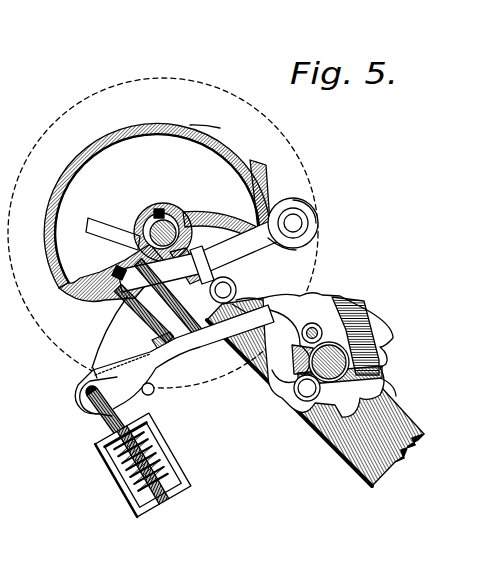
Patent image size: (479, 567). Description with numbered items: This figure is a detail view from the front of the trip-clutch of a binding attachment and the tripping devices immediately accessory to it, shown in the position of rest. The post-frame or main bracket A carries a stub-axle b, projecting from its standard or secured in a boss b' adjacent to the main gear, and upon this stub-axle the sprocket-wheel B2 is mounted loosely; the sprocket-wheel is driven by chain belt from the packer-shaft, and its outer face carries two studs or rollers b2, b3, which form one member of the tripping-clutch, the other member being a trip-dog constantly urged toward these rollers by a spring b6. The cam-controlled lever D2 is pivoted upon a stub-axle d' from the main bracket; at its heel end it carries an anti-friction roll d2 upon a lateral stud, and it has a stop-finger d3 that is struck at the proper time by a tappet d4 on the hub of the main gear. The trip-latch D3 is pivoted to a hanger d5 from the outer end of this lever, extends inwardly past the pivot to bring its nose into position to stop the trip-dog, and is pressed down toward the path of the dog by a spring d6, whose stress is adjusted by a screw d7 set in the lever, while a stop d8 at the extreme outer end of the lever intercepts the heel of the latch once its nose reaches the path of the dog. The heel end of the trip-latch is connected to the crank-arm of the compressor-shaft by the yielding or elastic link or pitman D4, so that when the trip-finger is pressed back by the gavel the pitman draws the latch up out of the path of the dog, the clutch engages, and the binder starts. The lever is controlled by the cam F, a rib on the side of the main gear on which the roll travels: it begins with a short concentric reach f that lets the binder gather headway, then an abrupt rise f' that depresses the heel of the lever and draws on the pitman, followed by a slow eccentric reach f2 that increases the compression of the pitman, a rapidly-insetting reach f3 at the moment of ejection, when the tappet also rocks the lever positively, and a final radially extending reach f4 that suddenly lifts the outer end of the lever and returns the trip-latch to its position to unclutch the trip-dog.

The cam F is at (157, 202).
The slow eccentric reach f2 is at (204, 128).
The rapidly-insetting reach f3 is at (80, 300).
The final reach f4 is at (240, 220).
The abrupt rise f' is at (269, 199).
The short concentric reach f is at (282, 255).
The tappet d4 is at (144, 226).
The anti-friction roll d2 is at (318, 222).
The stop-finger d3 is at (210, 292).
The cam-controlled lever D2 is at (278, 262).
The screw d7 is at (113, 272).
The stub-axle d' is at (259, 302).
The stop d8 is at (98, 378).
The spring d6 is at (174, 359).
The hanger d5 is at (153, 396).
The trip-latch D3 is at (76, 396).
The yielding or elastic link or pitman D4 is at (190, 484).
The post-frame or main bracket A is at (360, 432).
The sprocket-wheel B2 is at (388, 354).
The stub-axle b is at (314, 343).
The boss b' is at (310, 315).
The stud or roller b2 is at (320, 394).
The stud or roller b3 is at (364, 326).
The spring b6 is at (382, 371).